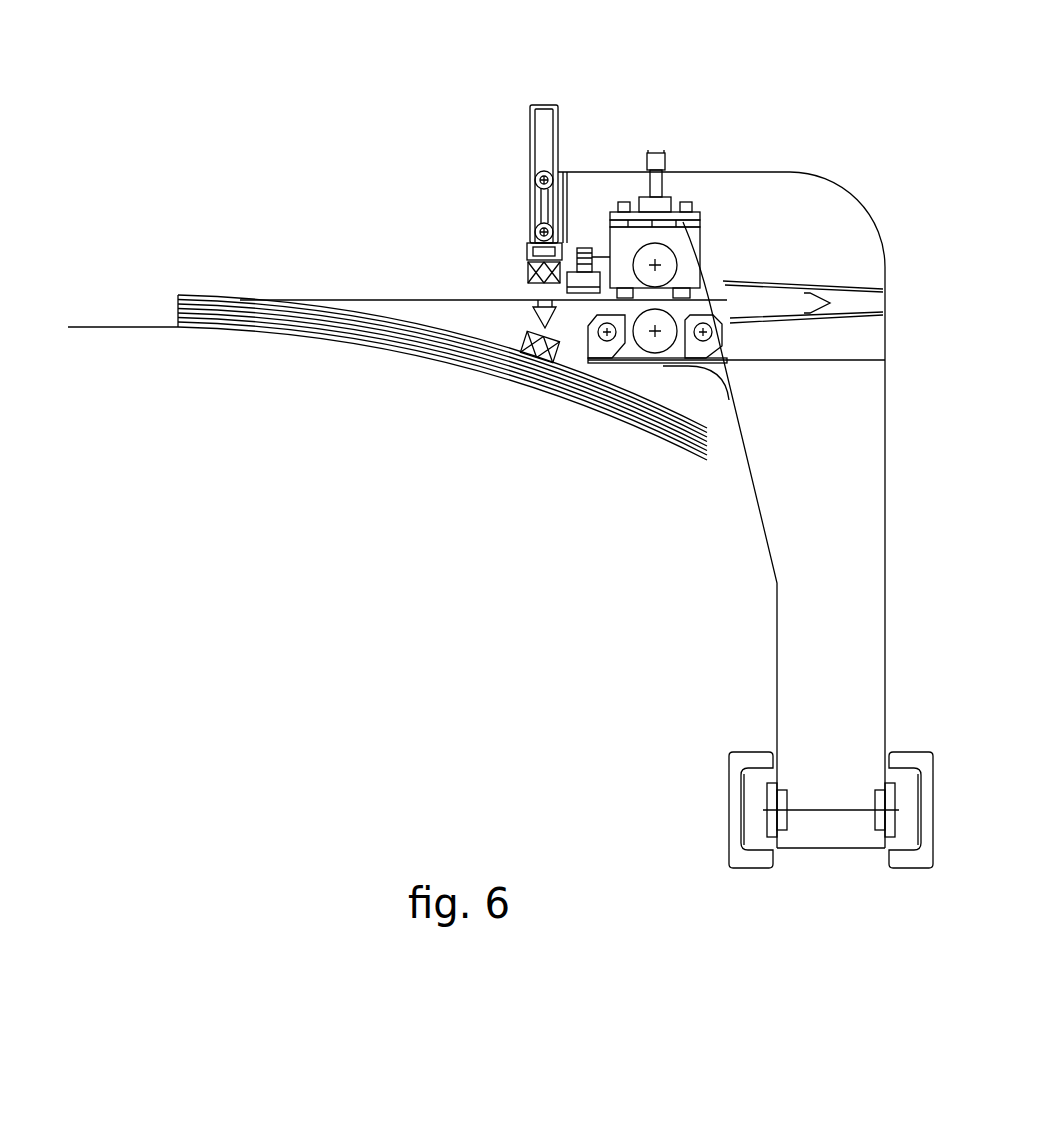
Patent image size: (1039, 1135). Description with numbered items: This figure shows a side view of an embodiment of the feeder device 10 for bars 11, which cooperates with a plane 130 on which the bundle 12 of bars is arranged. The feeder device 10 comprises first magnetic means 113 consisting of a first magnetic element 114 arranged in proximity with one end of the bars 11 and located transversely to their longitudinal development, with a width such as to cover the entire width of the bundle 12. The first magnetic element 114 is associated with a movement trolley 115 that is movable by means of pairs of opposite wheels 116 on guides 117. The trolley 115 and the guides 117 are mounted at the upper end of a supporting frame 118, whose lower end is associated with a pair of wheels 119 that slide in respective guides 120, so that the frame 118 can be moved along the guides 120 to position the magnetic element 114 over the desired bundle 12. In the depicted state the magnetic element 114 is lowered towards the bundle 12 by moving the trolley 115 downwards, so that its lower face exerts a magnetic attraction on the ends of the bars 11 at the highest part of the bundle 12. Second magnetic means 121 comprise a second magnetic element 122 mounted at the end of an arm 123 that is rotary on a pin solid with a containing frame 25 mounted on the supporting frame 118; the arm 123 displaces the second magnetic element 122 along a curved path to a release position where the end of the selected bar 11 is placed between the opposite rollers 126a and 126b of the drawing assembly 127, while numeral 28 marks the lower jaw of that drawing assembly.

The feeder device 10 is at (845, 150).
The bars 11 is at (540, 331).
The bundle 12 is at (535, 407).
The containing frame 25 is at (694, 238).
The lower gripper jaw 28 is at (867, 317).
The first magnetic means 113 is at (515, 260).
The first magnetic element 114 is at (524, 340).
The movement trolley 115 is at (538, 204).
The wheels 116 is at (549, 171).
The guides 117 is at (540, 115).
The supporting frame 118 is at (860, 238).
The wheels 119 is at (908, 790).
The guides 120 is at (917, 758).
The second magnetic means 121 is at (578, 306).
The second magnetic element 122 is at (593, 280).
The arm 123 is at (581, 252).
The roller 126a is at (655, 349).
The roller 126b is at (690, 290).
The drawing assembly 127 is at (724, 278).
The plane 130 is at (125, 328).